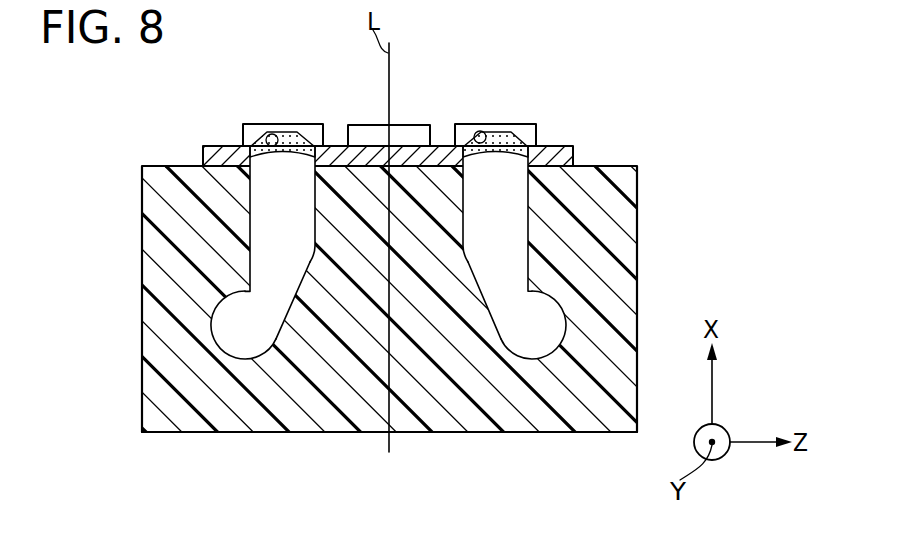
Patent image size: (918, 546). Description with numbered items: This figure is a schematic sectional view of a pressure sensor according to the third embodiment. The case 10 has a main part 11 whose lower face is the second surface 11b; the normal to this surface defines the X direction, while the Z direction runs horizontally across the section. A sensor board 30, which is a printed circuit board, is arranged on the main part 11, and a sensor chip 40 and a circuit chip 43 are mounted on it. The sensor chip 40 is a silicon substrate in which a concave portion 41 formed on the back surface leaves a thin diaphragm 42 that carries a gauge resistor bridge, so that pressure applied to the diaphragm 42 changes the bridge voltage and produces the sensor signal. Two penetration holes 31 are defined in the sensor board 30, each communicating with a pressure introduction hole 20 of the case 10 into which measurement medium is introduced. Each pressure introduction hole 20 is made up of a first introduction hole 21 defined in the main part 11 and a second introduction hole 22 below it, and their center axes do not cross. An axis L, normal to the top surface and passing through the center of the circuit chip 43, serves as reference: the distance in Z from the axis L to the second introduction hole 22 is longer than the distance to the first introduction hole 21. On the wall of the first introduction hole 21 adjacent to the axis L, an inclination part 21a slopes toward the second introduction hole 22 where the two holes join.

The case 10 is at (658, 169).
The main part 11 is at (622, 263).
The second surface 11b is at (563, 432).
The pressure introduction hole 20 is at (283, 477).
The first introduction hole 21 is at (262, 245).
The inclination part 21a is at (337, 305).
The second introduction hole 22 is at (247, 322).
The sensor board 30 is at (550, 152).
The penetration hole 31 is at (253, 152).
The sensor chip 40 is at (253, 135).
The concave portion 41 is at (275, 134).
The diaphragm 42 is at (283, 128).
The circuit chip 43 is at (365, 135).